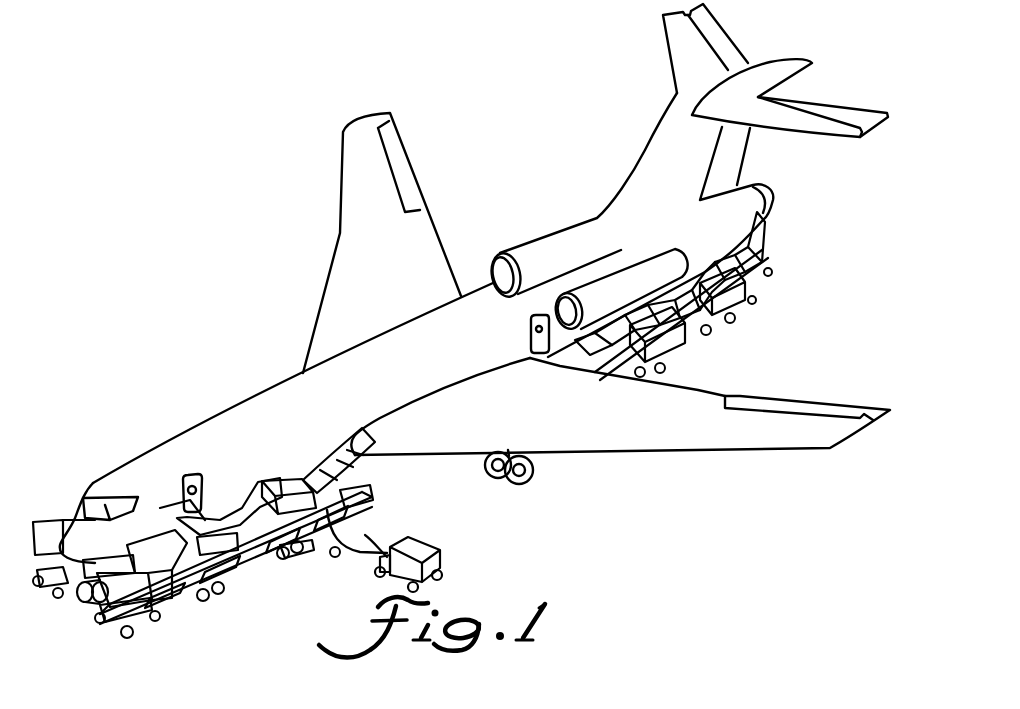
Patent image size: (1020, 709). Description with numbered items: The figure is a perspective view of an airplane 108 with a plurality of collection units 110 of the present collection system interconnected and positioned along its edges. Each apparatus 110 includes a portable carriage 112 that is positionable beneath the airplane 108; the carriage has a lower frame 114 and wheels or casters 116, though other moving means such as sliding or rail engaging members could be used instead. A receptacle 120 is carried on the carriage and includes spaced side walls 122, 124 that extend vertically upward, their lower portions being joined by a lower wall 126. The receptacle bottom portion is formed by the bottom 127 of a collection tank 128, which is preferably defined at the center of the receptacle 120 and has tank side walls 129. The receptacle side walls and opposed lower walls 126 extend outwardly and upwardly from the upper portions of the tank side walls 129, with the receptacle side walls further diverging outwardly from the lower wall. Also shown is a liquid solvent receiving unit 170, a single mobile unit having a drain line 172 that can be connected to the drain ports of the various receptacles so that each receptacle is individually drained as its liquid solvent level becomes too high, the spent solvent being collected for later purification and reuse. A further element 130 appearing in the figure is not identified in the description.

The airplane 108 is at (118, 457).
The collection unit 110 is at (104, 649).
The portable carriage 112 is at (173, 597).
The lower frame 114 is at (218, 578).
The wheels or casters 116 is at (292, 562).
The receptacle 120 is at (316, 463).
The side wall 122 is at (132, 555).
The side wall 124 is at (173, 540).
The lower wall 126 is at (348, 450).
The bottom of collection tank 127 is at (174, 592).
The collection tank 128 is at (257, 498).
The tank side walls 129 is at (275, 568).
The hose 130 is at (311, 542).
The liquid solvent receiving unit 170 is at (442, 554).
The drain line 172 is at (361, 540).